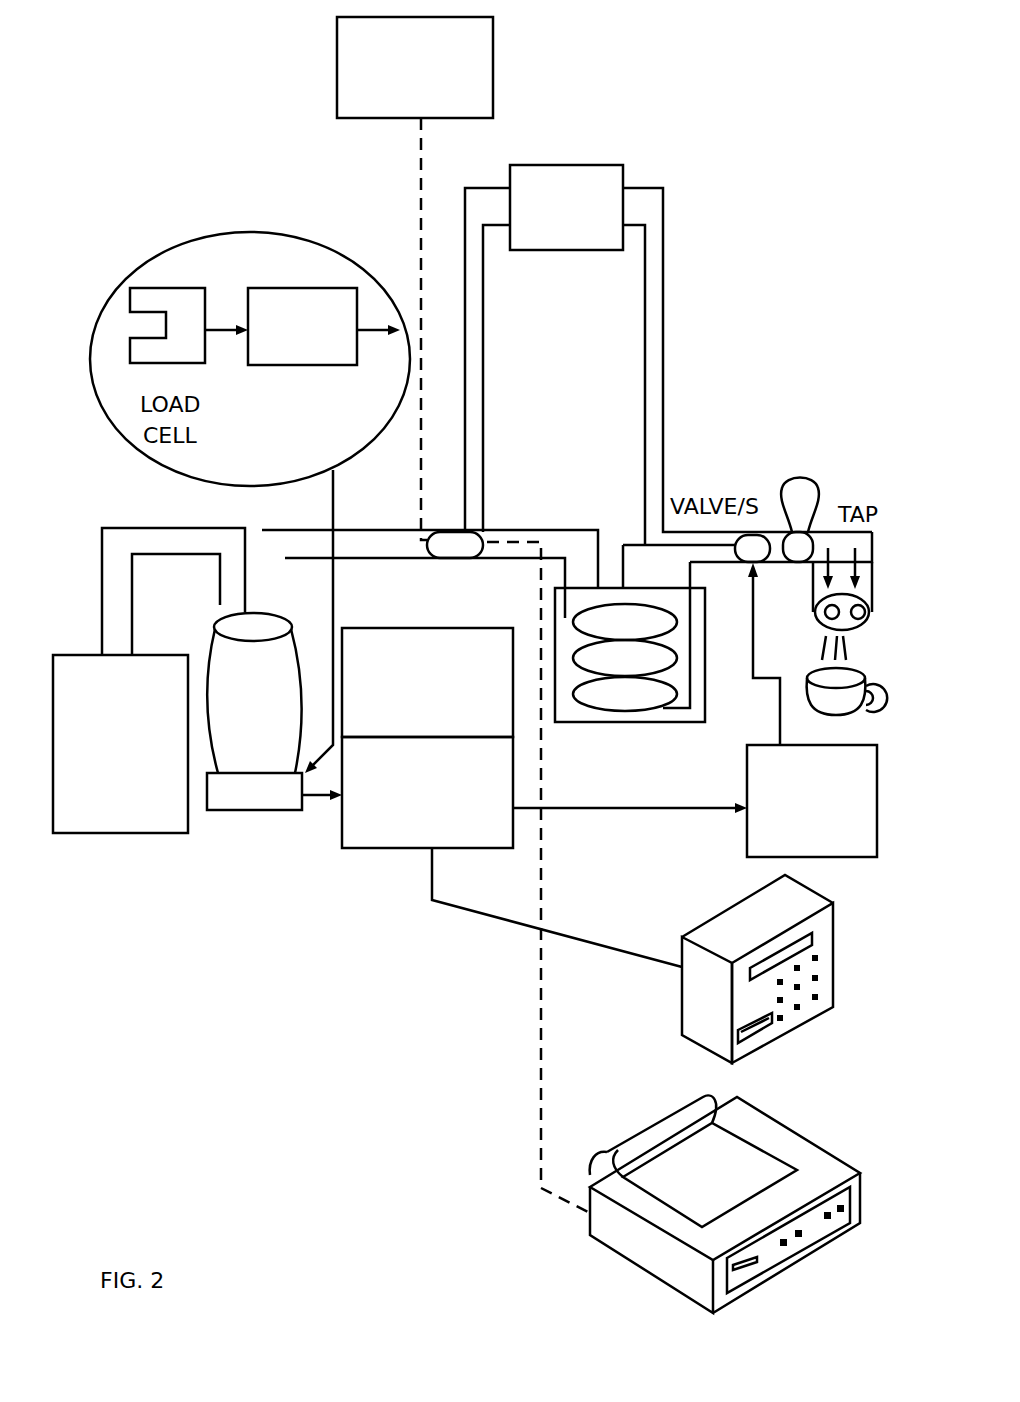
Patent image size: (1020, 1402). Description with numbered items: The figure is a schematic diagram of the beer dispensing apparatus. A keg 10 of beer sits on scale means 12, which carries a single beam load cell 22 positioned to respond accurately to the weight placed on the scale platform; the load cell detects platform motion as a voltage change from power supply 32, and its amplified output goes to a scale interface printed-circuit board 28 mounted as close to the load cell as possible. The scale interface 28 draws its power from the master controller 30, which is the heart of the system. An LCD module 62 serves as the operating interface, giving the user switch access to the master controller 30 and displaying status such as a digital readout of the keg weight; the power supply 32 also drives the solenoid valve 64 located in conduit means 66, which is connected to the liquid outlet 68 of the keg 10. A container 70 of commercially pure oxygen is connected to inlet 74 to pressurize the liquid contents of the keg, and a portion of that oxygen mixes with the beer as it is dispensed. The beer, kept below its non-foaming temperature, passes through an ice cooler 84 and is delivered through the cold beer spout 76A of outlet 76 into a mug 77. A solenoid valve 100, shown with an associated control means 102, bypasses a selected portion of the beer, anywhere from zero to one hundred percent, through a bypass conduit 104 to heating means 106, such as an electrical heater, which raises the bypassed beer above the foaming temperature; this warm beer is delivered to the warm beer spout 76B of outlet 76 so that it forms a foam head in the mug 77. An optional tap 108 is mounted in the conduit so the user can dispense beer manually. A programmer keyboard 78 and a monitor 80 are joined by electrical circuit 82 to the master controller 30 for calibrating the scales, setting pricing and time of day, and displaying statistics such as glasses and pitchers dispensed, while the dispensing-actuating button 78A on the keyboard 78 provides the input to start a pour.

The keg 10 is at (300, 810).
The scale means 12 is at (217, 810).
The single beam load cell 22 is at (155, 288).
The scale interface printed-circuit board 28 is at (272, 288).
The master controller 30 is at (392, 848).
The power supply 32 is at (405, 628).
The LCD module 62 is at (823, 857).
The solenoid valve 64 is at (751, 564).
The conduit means 66 is at (347, 524).
The liquid outlet 68 is at (280, 612).
The container of commercially pure oxygen 70 is at (70, 833).
The inlet 74 is at (224, 610).
The outlet 76 is at (866, 620).
The cold beer spout 76A is at (828, 623).
The warm beer spout 76B is at (868, 615).
The mug 77 is at (833, 720).
The programmer keyboard 78 is at (778, 1123).
The dispensing-actuating button 78A is at (750, 1262).
The monitor 80 is at (835, 960).
The electrical circuit 82 is at (487, 915).
The ice cooler 84 is at (705, 680).
The solenoid valve 100 is at (487, 532).
The control means 102 is at (493, 70).
The bypass conduit 104 is at (462, 212).
The heating means 106 is at (573, 165).
The tap 108 is at (797, 472).